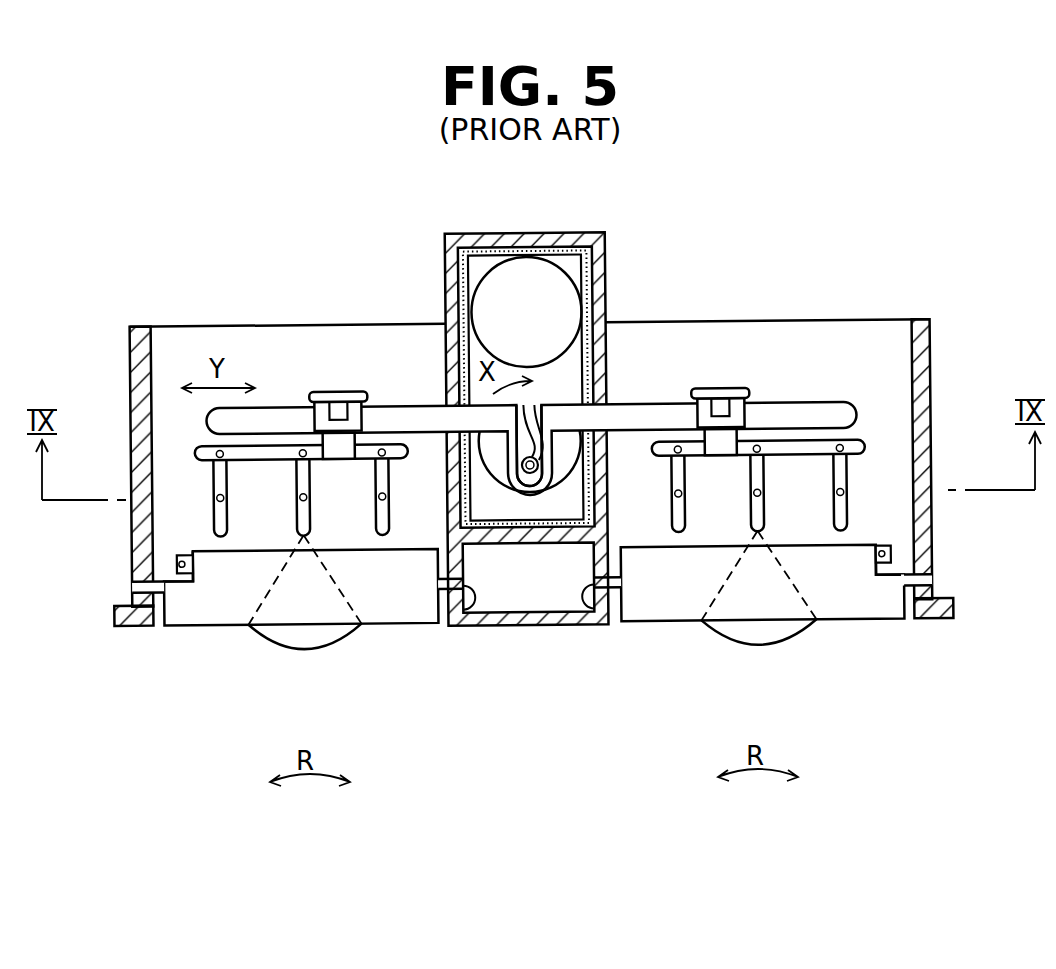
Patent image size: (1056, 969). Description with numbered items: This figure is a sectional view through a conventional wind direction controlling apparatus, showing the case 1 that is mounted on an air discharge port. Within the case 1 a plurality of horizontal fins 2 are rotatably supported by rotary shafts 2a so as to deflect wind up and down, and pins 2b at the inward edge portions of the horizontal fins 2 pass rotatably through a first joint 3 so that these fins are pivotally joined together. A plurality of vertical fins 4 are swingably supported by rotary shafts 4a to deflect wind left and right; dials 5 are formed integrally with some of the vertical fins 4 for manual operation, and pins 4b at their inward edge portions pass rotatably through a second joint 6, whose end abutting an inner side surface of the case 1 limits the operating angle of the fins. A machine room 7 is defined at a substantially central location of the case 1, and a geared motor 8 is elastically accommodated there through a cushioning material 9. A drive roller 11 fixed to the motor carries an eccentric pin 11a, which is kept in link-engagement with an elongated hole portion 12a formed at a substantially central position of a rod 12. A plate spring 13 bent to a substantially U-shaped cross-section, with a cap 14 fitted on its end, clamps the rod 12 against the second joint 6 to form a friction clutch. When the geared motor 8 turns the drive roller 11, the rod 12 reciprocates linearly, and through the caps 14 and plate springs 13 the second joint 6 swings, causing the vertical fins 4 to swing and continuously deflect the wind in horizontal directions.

The case 1 is at (935, 622).
The horizontal fins 2 is at (836, 624).
The rotary shafts 2a is at (131, 584).
The pins 2b is at (176, 561).
The first joint 3 is at (182, 552).
The vertical fins 4 is at (222, 540).
The rotary shafts 4a is at (386, 495).
The pins 4b is at (218, 456).
The dials 5 is at (340, 646).
The second joint 6 is at (197, 450).
The machine room 7 is at (607, 240).
The geared motor 8 is at (528, 268).
The cushioning material 9 is at (537, 480).
The drive roller 11 is at (556, 490).
The eccentric pin 11a is at (545, 406).
The rod 12 is at (405, 405).
The elongated hole portion 12a is at (503, 478).
The plate spring 13 is at (343, 390).
The cap 14 is at (312, 392).